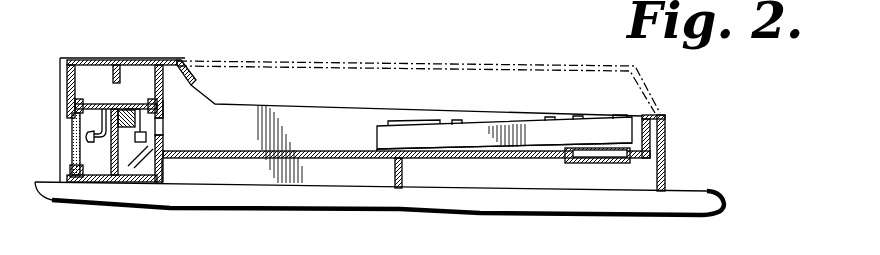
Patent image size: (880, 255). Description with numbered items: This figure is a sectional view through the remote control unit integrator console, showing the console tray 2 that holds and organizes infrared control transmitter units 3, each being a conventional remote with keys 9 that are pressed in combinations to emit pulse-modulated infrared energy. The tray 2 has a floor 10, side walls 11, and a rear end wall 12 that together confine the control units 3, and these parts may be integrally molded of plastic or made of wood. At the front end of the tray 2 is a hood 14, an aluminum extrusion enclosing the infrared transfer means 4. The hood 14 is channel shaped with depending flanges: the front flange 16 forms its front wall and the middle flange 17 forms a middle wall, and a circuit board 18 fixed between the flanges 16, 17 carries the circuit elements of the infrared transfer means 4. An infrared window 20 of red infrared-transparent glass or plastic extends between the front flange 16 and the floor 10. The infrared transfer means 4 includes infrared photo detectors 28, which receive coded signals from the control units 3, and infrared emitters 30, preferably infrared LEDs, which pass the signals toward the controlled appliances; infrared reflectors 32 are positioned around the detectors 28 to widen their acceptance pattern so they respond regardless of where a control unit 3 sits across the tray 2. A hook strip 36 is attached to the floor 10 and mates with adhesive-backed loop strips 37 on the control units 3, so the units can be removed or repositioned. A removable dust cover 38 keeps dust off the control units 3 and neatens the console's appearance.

The console tray 2 is at (669, 120).
The infrared control transmitter unit 3 is at (538, 125).
The infrared transfer means 4 is at (103, 99).
The keys 9 is at (603, 113).
The floor 10 is at (362, 160).
The side walls 11 is at (337, 110).
The rear end wall 12 is at (665, 157).
The hood 14 is at (75, 58).
The front flange 16 is at (67, 88).
The middle flange 17 is at (163, 103).
The circuit board 18 is at (133, 104).
The infrared window 20 is at (80, 125).
The infrared photo detectors 28 is at (133, 143).
The infrared emitters 30 is at (86, 137).
The infrared reflectors 32 is at (150, 150).
The hook strip 36 is at (585, 163).
The loop strips 37 is at (618, 146).
The dust cover 38 is at (553, 63).